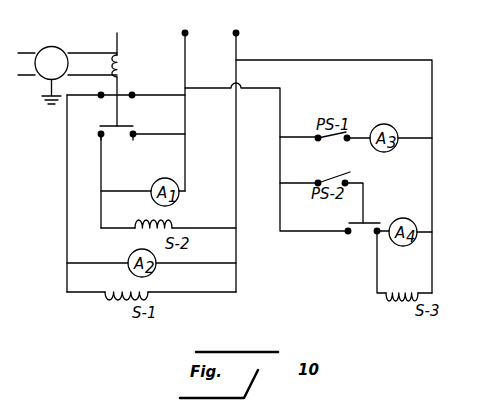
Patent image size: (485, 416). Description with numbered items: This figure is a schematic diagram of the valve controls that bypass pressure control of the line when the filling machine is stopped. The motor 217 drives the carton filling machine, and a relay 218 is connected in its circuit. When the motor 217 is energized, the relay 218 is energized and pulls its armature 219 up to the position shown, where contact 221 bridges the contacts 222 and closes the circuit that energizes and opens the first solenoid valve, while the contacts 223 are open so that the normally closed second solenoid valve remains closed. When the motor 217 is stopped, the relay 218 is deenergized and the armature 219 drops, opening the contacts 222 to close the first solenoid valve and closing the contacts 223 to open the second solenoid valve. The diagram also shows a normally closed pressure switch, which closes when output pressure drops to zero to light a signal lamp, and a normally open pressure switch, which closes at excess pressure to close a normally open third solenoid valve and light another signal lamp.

The motor 217 is at (60, 50).
The relay 218 is at (121, 82).
The armature 219 is at (118, 47).
The contact 221 is at (129, 97).
The contacts 222 is at (132, 93).
The contacts 223 is at (133, 137).